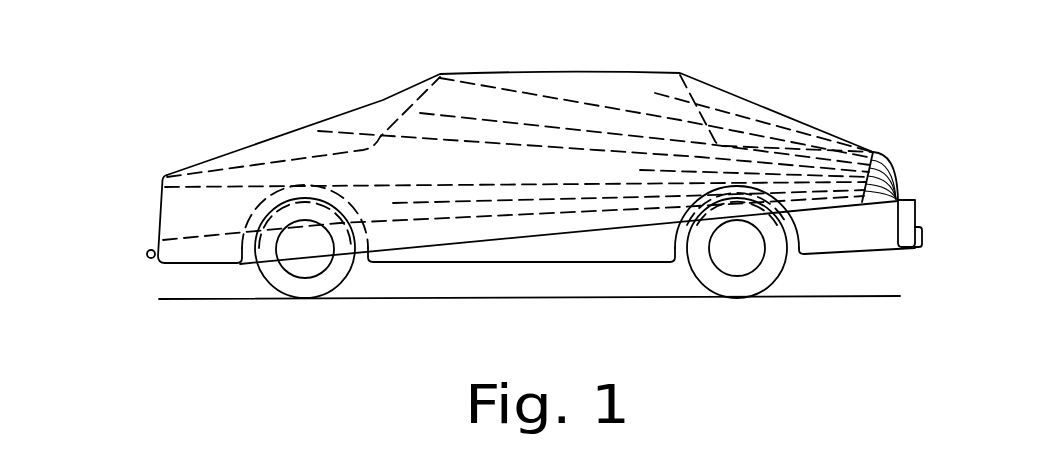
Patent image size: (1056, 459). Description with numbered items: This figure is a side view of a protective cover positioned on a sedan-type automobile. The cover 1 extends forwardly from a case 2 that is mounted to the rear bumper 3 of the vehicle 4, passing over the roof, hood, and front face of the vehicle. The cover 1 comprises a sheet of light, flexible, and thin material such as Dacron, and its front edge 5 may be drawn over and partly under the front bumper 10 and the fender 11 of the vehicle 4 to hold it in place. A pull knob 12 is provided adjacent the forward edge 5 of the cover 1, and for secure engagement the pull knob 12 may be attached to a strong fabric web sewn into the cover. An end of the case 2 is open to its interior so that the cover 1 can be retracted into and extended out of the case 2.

The cover 1 is at (287, 132).
The case 2 is at (907, 207).
The rear bumper 3 is at (923, 232).
The vehicle 4 is at (648, 248).
The front edge 5 is at (167, 265).
The front bumper 10 is at (175, 250).
The fender 11 is at (202, 248).
The pull knob 12 is at (147, 250).